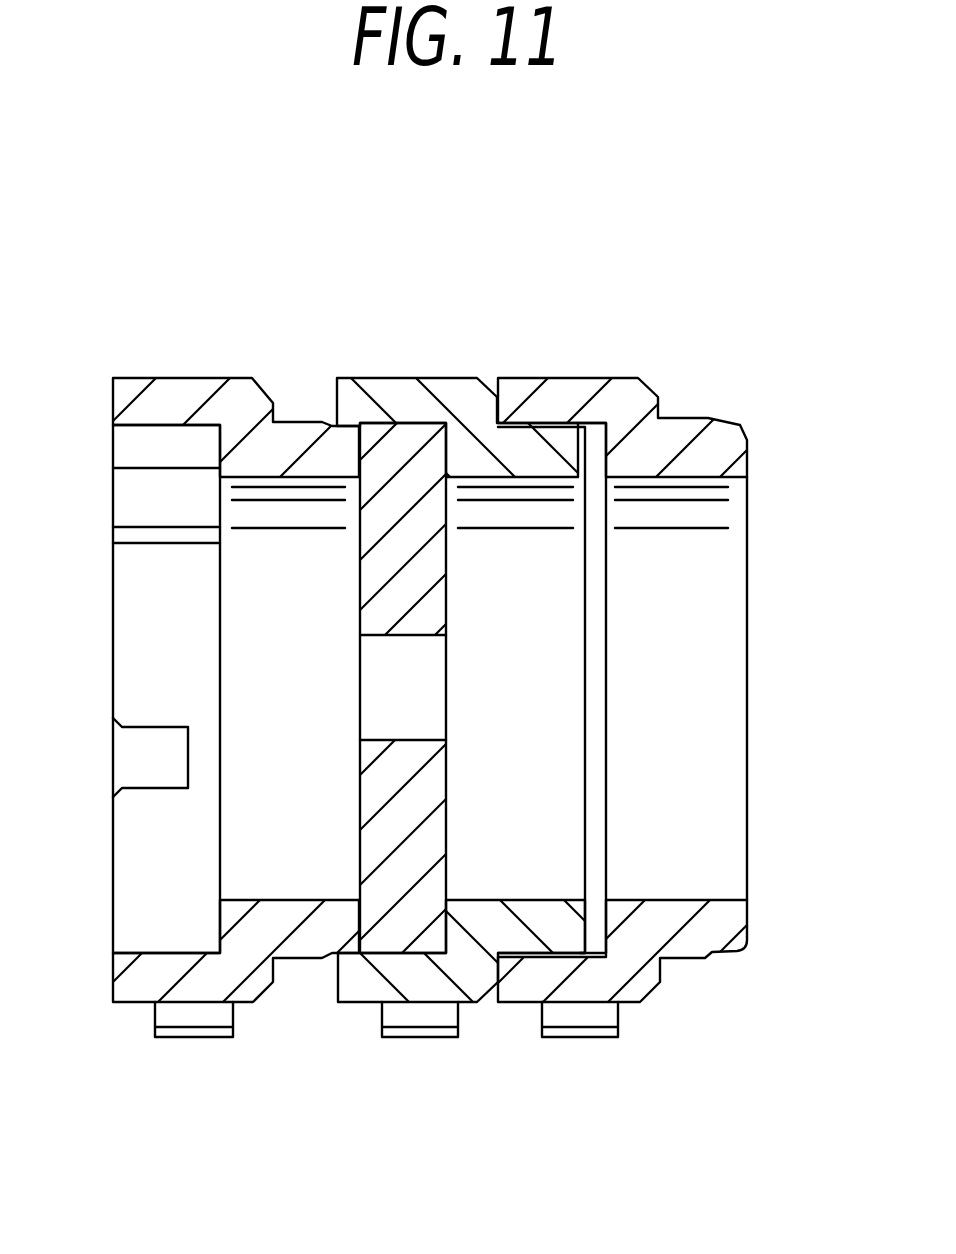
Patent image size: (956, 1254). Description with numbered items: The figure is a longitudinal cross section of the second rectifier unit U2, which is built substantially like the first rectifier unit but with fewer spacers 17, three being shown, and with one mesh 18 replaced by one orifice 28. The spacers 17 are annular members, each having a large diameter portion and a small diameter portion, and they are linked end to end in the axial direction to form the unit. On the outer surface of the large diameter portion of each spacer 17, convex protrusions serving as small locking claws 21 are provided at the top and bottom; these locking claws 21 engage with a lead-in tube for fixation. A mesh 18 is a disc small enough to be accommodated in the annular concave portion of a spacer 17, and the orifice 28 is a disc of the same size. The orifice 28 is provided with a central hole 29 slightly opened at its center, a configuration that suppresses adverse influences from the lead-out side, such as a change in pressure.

The second rectifier unit U2 is at (560, 266).
The spacer 17 is at (175, 378).
The mesh 18 is at (598, 437).
The locking claw 21 is at (580, 1016).
The orifice 28 is at (397, 435).
The central hole 29 is at (378, 740).